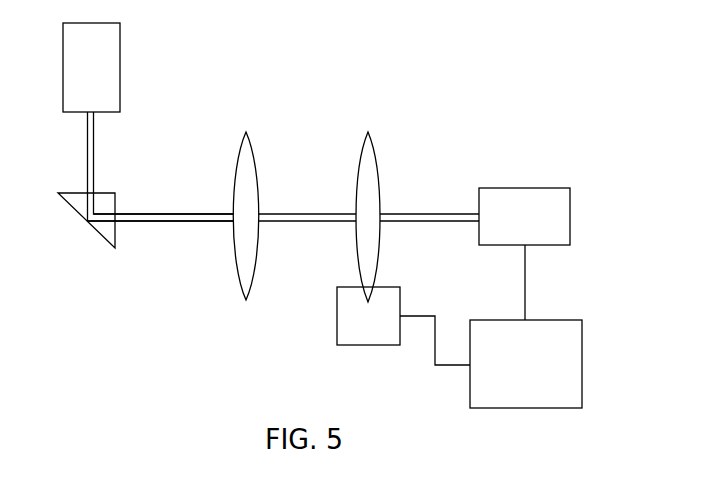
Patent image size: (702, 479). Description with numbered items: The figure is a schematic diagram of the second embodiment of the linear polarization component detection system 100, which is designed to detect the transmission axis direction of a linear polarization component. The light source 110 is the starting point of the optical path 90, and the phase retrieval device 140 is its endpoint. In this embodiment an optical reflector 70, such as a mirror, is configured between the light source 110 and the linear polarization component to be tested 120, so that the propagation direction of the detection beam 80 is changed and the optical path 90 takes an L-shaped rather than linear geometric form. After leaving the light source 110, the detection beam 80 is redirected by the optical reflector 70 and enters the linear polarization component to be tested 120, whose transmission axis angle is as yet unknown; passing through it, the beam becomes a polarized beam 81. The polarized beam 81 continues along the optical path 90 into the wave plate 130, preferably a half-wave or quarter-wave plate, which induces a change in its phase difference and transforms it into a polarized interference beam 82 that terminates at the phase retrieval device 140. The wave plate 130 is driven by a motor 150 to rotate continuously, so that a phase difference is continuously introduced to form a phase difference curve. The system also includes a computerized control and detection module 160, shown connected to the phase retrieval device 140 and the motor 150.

The linear polarization component detection system 100 is at (441, 59).
The light source 110 is at (91, 67).
The optical reflector 70 is at (100, 233).
The detection beam 80 is at (161, 166).
The optical path 90 is at (178, 212).
The linear polarization component to be tested 120 is at (246, 132).
The polarized beam 81 is at (305, 213).
The wave plate 130 is at (368, 132).
The polarized interference beam 82 is at (424, 213).
The phase retrieval device 140 is at (524, 216).
The motor 150 is at (368, 316).
The computerized control and detection module 160 is at (526, 364).